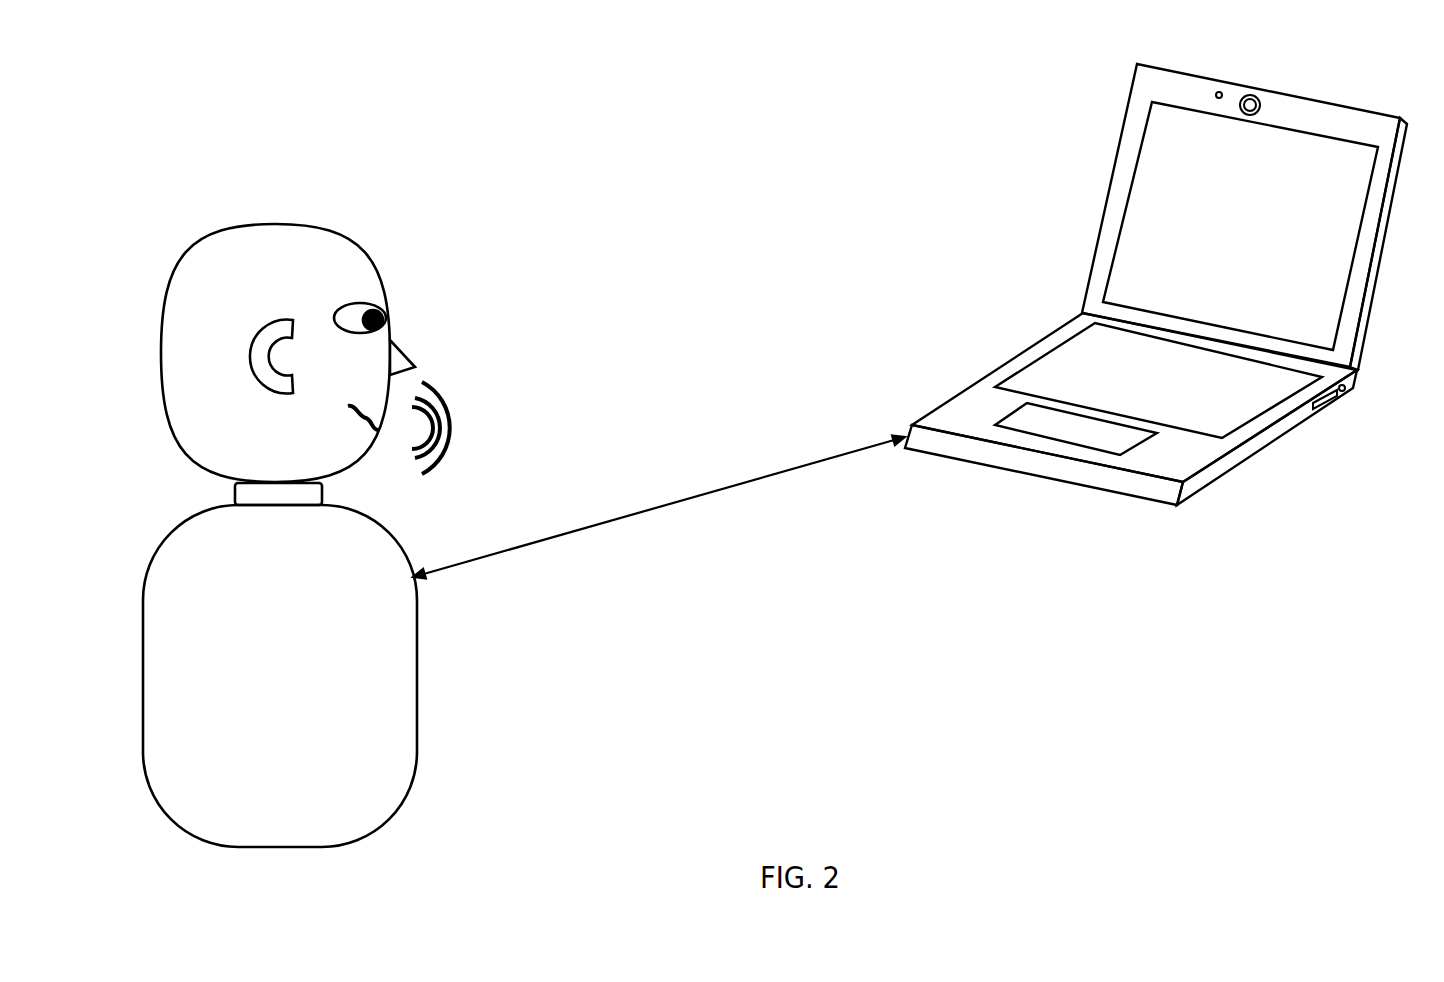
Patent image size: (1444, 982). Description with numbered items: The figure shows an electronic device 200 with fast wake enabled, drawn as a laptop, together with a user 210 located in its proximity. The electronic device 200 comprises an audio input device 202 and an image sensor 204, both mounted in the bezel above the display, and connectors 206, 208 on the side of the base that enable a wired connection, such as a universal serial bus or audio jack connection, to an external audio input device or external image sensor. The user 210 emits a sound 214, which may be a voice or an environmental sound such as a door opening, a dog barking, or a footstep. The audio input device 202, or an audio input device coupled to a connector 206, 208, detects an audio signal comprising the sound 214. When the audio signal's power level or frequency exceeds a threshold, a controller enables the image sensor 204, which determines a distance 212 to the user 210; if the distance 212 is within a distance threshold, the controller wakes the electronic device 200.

The electronic device 200 is at (1046, 100).
The audio input device 202 is at (1219, 91).
The image sensor 204 is at (1261, 98).
The connector 206 is at (1323, 409).
The connector 208 is at (1345, 391).
The user 210 is at (259, 199).
The distance 212 is at (564, 533).
The sound 214 is at (460, 388).